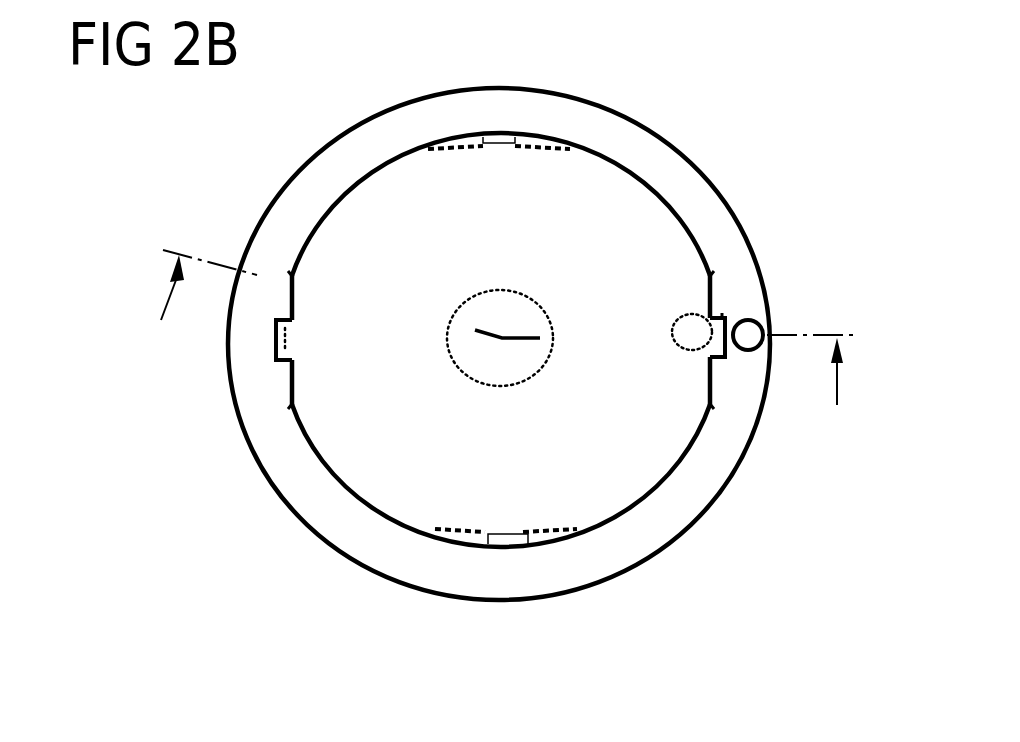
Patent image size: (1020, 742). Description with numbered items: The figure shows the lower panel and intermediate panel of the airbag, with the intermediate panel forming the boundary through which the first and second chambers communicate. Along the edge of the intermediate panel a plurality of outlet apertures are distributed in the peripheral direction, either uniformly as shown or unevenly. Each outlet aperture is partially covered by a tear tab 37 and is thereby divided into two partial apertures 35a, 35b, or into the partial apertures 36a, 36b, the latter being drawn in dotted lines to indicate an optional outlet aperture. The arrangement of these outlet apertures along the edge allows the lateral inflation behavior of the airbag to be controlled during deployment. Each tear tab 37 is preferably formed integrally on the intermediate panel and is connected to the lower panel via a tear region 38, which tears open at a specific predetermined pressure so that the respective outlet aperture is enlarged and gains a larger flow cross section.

The partial aperture 35a is at (285, 297).
The partial aperture 35b is at (293, 385).
The partial aperture 36a is at (548, 140).
The partial aperture 36b is at (466, 141).
The tear tab 37 is at (506, 137).
The tear region 38 is at (509, 142).